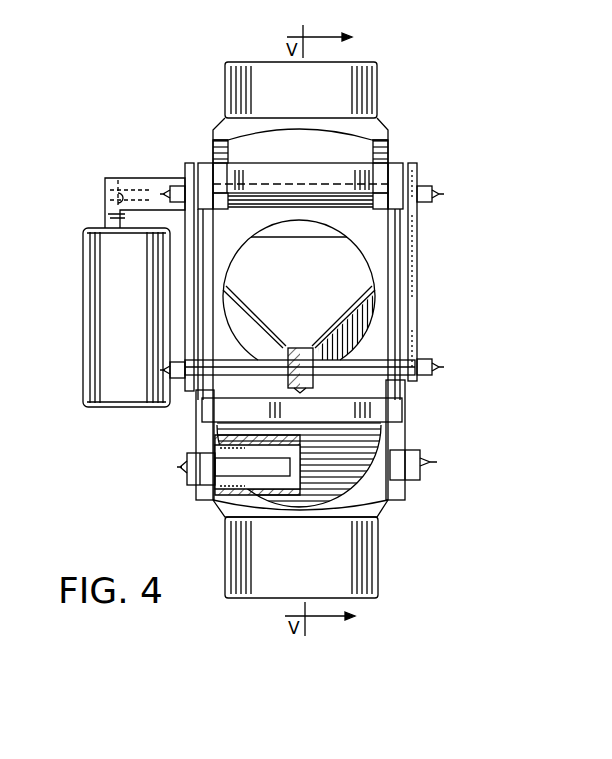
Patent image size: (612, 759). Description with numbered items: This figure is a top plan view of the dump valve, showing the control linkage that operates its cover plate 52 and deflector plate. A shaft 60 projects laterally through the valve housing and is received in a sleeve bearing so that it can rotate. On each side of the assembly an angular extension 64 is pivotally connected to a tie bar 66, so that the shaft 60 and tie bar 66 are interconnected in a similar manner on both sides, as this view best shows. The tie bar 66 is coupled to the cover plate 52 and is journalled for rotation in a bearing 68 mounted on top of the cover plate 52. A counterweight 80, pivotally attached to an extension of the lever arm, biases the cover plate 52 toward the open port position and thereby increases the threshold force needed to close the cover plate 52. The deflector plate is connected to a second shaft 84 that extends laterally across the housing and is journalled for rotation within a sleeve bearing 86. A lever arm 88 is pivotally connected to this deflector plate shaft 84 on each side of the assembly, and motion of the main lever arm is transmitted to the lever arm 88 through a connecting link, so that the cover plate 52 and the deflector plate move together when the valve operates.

The cover plate 52 is at (312, 246).
The shaft 60 is at (274, 203).
The angular extension 64 is at (190, 272).
The tie bar 66 is at (253, 365).
The bearing 68 is at (299, 348).
The counterweight 80 is at (103, 269).
The shaft 84 is at (270, 440).
The sleeve bearing 86 is at (253, 495).
The lever arm 88 is at (200, 432).